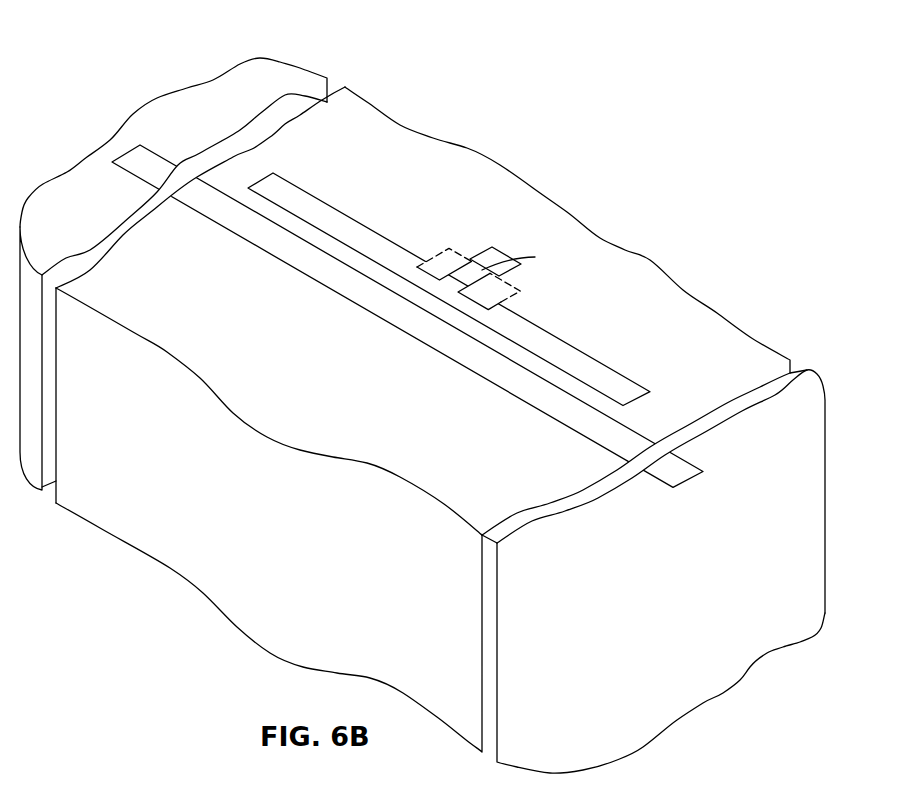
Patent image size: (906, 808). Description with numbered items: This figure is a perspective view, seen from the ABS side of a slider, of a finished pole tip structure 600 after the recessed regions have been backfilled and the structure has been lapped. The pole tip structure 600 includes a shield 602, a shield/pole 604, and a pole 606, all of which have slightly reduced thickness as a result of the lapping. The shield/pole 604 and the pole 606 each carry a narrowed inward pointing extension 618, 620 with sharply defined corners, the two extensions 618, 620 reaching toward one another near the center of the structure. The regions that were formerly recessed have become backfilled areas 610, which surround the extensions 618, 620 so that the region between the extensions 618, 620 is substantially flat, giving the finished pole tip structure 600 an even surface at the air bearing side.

The pole tip structure 600 is at (200, 70).
The shield 602 is at (553, 408).
The shield/pole 604 is at (590, 357).
The pole 606 is at (497, 250).
The backfilled areas 610 is at (447, 250).
The inward pointing extension 618 is at (535, 257).
The inward pointing extension 620 is at (458, 285).